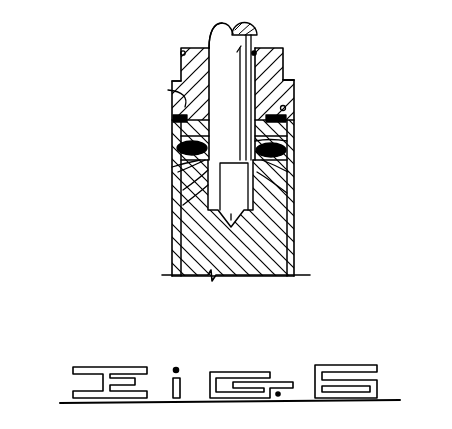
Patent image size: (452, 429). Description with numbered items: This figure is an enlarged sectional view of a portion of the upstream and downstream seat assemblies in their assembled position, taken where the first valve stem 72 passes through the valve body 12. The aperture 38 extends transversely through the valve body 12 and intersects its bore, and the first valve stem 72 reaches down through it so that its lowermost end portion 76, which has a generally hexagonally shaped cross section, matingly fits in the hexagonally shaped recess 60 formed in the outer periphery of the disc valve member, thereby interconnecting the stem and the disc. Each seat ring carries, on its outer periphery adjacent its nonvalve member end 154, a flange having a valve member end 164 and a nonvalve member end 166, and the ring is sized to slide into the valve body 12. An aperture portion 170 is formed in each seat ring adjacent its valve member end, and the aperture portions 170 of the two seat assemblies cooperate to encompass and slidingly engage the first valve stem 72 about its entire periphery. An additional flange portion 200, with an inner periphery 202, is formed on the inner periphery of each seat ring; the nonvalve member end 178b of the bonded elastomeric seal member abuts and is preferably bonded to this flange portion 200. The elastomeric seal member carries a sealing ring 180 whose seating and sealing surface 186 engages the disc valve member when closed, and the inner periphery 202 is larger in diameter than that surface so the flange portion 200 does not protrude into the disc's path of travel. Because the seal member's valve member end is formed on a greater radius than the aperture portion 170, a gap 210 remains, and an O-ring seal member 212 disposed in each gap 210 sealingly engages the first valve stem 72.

The valve body 12 is at (270, 65).
The aperture 38 is at (208, 32).
The recess 60 is at (183, 228).
The first valve stem 72 is at (233, 50).
The lowermost end portion 76 is at (286, 226).
The nonvalve member end 154 is at (174, 119).
The valve member end 164 is at (173, 82).
The nonvalve member end 166 is at (177, 111).
The aperture portion 170 is at (287, 80).
The nonvalve member end 178b is at (186, 144).
The sealing ring 180 is at (178, 172).
The seating and sealing surface 186 is at (183, 190).
The flange portion 200 is at (178, 148).
The inner periphery 202 is at (172, 167).
The gap 210 is at (183, 205).
The O-ring seal member 212 is at (295, 140).